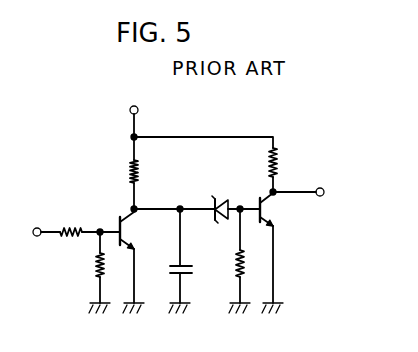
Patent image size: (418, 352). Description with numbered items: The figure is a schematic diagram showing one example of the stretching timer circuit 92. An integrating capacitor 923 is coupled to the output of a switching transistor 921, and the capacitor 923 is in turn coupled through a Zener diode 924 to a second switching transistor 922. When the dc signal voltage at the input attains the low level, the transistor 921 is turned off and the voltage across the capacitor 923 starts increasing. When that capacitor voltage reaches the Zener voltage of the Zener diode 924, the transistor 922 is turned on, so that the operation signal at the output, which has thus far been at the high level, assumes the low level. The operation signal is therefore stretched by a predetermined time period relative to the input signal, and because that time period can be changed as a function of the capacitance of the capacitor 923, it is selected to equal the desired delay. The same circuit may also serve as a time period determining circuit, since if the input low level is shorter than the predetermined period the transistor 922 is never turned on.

The stretching timer circuit 92 is at (327, 121).
The switching transistor 921 is at (117, 228).
The switching transistor 922 is at (275, 212).
The integrating capacitor 923 is at (170, 273).
The Zener diode 924 is at (209, 219).